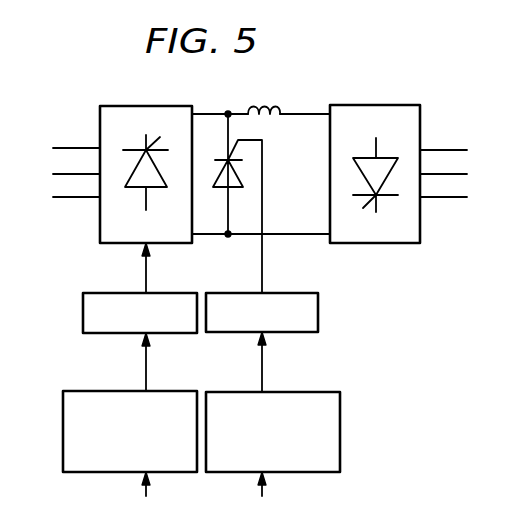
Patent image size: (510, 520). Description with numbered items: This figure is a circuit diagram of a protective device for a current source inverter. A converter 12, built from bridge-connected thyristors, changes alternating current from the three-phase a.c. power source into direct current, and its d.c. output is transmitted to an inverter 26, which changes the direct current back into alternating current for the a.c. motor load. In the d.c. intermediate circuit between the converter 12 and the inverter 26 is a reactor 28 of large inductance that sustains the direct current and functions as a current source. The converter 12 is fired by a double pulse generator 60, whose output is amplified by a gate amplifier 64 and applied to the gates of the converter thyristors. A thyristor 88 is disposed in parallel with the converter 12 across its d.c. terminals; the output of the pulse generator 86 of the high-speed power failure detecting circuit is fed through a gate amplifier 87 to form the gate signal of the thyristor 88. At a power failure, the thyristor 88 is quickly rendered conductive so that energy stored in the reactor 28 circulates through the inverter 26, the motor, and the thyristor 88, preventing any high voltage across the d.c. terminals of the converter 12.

The converter 12 is at (170, 112).
The reactor 28 is at (268, 108).
The inverter 26 is at (380, 110).
The thyristor 88 is at (242, 175).
The gate amplifier 64 is at (83, 327).
The gate amplifier 87 is at (318, 316).
The double pulse generator 60 is at (70, 395).
The pulse generator 86 is at (335, 413).